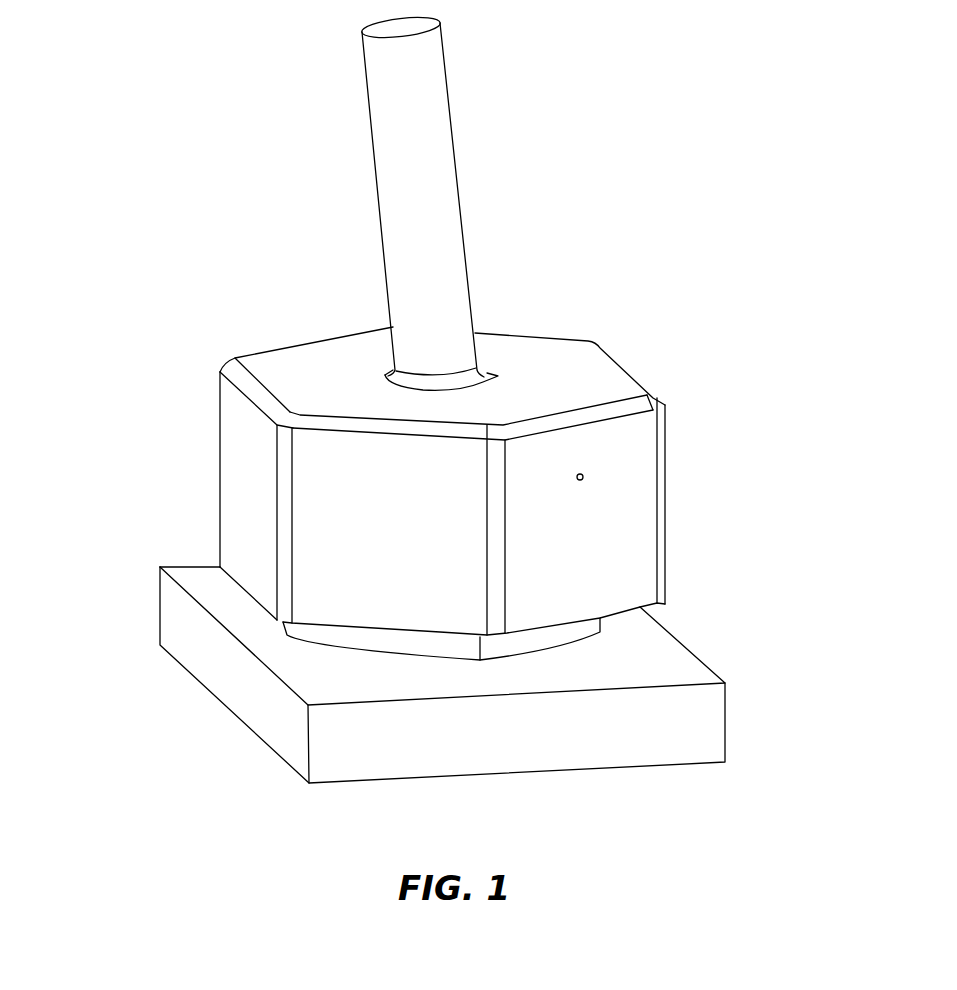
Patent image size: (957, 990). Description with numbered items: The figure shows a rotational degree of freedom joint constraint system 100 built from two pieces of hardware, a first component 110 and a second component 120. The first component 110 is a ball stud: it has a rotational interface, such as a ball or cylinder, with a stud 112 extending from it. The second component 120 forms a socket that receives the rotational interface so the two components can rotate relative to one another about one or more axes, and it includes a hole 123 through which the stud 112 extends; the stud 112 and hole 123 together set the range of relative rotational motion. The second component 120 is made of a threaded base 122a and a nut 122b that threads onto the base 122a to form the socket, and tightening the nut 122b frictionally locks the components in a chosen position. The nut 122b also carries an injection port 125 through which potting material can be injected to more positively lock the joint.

The rotational degree of freedom joint constraint system 100 is at (285, 153).
The first component 110 is at (477, 156).
The stud 112 is at (467, 270).
The second component 120 is at (689, 532).
The threaded base 122a is at (333, 635).
The nut 122b is at (220, 457).
The hole 123 is at (487, 367).
The injection port 125 is at (585, 472).